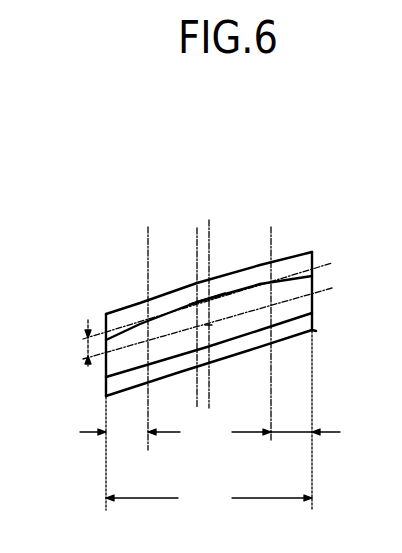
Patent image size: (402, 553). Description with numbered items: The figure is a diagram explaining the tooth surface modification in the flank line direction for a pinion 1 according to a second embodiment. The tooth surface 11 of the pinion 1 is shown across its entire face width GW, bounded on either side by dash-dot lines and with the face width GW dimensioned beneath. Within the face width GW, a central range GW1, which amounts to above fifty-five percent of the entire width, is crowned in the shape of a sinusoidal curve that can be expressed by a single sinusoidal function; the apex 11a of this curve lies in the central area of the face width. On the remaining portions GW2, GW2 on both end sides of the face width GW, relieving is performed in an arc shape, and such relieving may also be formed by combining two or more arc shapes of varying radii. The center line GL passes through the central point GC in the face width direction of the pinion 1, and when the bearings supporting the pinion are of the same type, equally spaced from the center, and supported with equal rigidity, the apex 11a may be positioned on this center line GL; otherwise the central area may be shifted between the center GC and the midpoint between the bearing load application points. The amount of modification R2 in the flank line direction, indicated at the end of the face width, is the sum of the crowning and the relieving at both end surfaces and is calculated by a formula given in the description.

The pinion 1 is at (314, 258).
The tooth surface 11 is at (288, 267).
The apex 11a is at (208, 301).
The center line GL is at (210, 238).
The central point in the face width direction GC is at (209, 326).
The amount of modification in the flank line direction R2 is at (87, 343).
The face width GW is at (209, 498).
The range of sinusoidal crowning GW1 is at (209, 433).
The remaining portions on both end sides GW2 is at (125, 434).